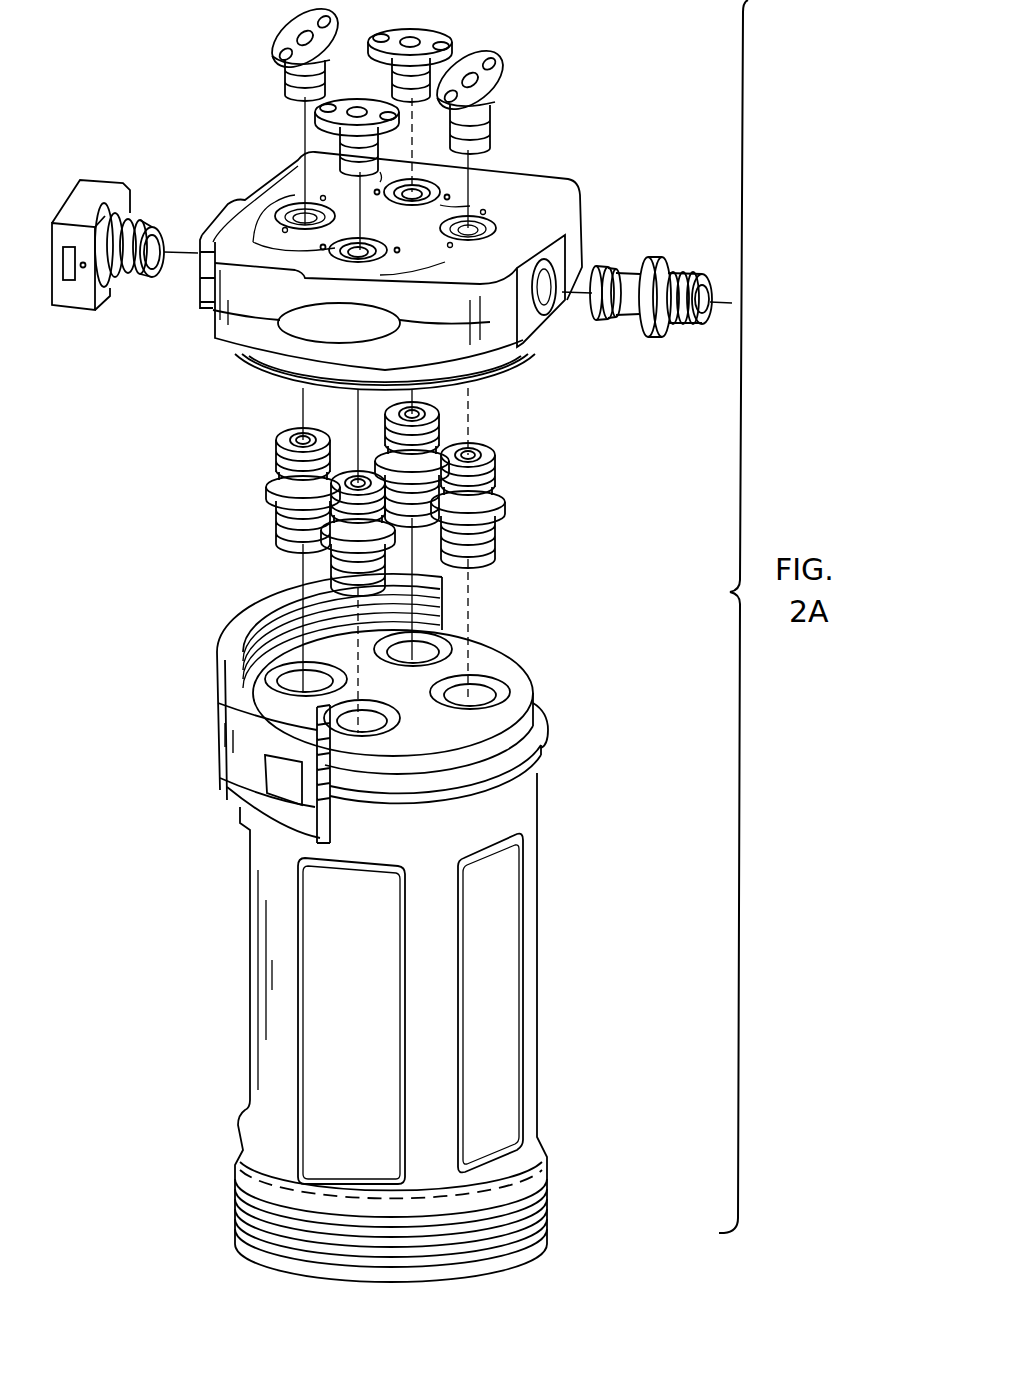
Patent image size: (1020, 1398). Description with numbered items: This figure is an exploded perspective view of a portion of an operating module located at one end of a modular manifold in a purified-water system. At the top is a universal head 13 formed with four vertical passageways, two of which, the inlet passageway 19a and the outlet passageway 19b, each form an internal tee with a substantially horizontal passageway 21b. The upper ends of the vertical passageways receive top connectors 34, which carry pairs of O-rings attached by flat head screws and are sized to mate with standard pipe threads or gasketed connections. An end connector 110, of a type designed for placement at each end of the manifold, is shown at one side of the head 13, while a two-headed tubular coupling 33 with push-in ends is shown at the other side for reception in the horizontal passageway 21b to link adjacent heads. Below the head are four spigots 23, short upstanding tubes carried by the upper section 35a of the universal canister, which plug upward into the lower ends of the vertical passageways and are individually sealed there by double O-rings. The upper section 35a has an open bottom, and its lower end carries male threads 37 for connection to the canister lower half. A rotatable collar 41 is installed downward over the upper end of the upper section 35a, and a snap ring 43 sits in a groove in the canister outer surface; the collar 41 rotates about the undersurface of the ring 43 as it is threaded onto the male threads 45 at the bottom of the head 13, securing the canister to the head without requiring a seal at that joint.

The universal head 13 is at (628, 165).
The top connectors 34 is at (285, 48).
The end connector 110 is at (105, 178).
The inlet passageway 19a is at (295, 192).
The outlet passageway 19b is at (480, 215).
The tubular coupling 33 is at (650, 262).
The horizontal passageway 21b is at (545, 302).
The male threads 45 is at (482, 368).
The spigots 23 is at (280, 472).
The collar 41 is at (215, 716).
The snap ring 43 is at (545, 758).
The upper section 35a is at (541, 967).
The male threads 37 is at (548, 1198).